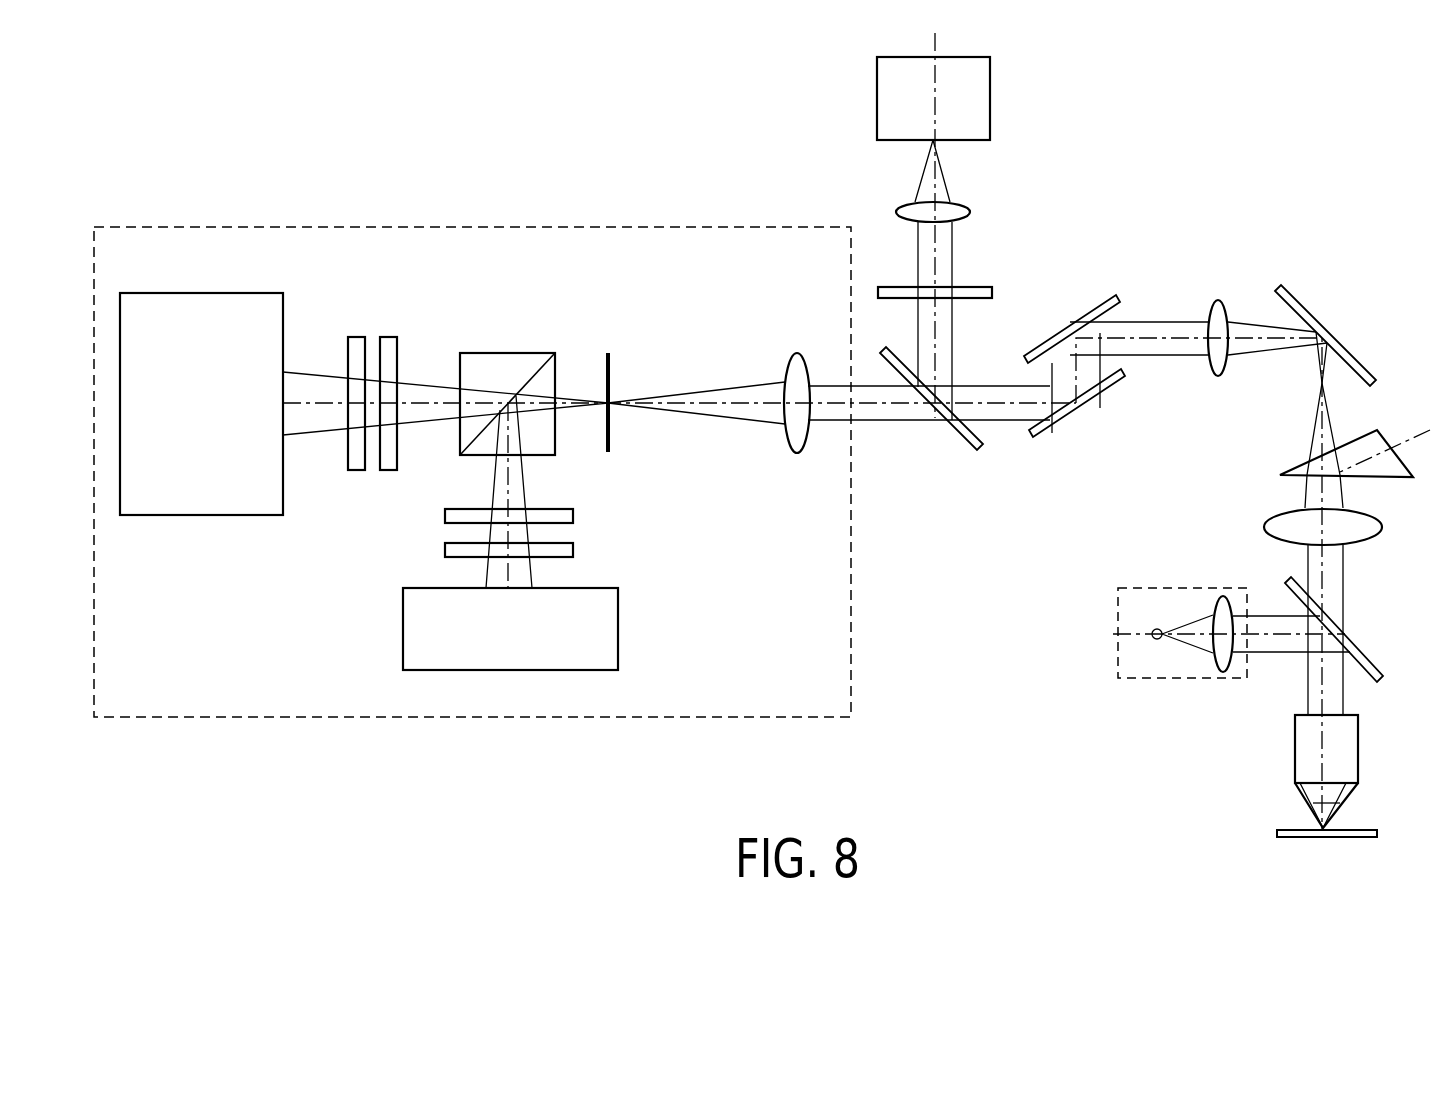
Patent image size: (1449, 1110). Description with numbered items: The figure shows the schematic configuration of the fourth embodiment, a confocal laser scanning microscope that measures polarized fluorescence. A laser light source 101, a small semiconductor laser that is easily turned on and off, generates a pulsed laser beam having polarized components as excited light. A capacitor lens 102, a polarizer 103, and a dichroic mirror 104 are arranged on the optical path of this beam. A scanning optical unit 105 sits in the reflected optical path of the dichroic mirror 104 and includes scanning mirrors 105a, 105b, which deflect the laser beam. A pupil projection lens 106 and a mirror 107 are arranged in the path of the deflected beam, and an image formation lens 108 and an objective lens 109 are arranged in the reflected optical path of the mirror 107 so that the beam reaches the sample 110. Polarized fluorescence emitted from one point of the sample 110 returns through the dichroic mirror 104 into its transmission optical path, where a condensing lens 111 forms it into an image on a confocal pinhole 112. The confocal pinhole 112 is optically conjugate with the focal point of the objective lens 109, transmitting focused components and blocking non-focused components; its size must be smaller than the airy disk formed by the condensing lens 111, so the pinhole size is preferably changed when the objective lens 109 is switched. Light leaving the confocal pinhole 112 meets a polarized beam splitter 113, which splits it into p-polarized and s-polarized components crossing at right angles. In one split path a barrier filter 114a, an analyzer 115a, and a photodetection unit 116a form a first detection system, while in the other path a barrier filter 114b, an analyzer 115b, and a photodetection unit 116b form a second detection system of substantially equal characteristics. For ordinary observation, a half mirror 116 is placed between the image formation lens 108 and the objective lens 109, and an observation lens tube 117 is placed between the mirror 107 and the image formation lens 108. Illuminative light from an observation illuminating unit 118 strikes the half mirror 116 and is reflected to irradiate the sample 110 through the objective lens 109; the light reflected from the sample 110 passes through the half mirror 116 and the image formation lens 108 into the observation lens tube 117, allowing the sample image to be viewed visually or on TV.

The laser light source 101 is at (992, 96).
The capacitor lens 102 is at (972, 209).
The polarizer 103 is at (975, 287).
The dichroic mirror 104 is at (945, 449).
The scanning optical unit 105 is at (1112, 404).
The scanning mirror 105a is at (1042, 440).
The scanning mirror 105b is at (1057, 340).
The pupil projection lens 106 is at (1218, 300).
The mirror 107 is at (1355, 356).
The image formation lens 108 is at (1373, 541).
The objective lens 109 is at (1360, 750).
The sample 110 is at (1378, 834).
The condensing lens 111 is at (797, 444).
The confocal pinhole 112 is at (607, 353).
The polarized beam splitter 113 is at (487, 353).
The barrier filter 114a is at (575, 516).
The barrier filter 114b is at (390, 472).
The analyzer 115a is at (575, 550).
The analyzer 115b is at (356, 473).
The half mirror 116 is at (1367, 661).
The photodetection unit 116a is at (620, 627).
The photodetection unit 116b is at (240, 293).
The observation lens tube 117 is at (1380, 432).
The observation illuminating unit 118 is at (1165, 680).